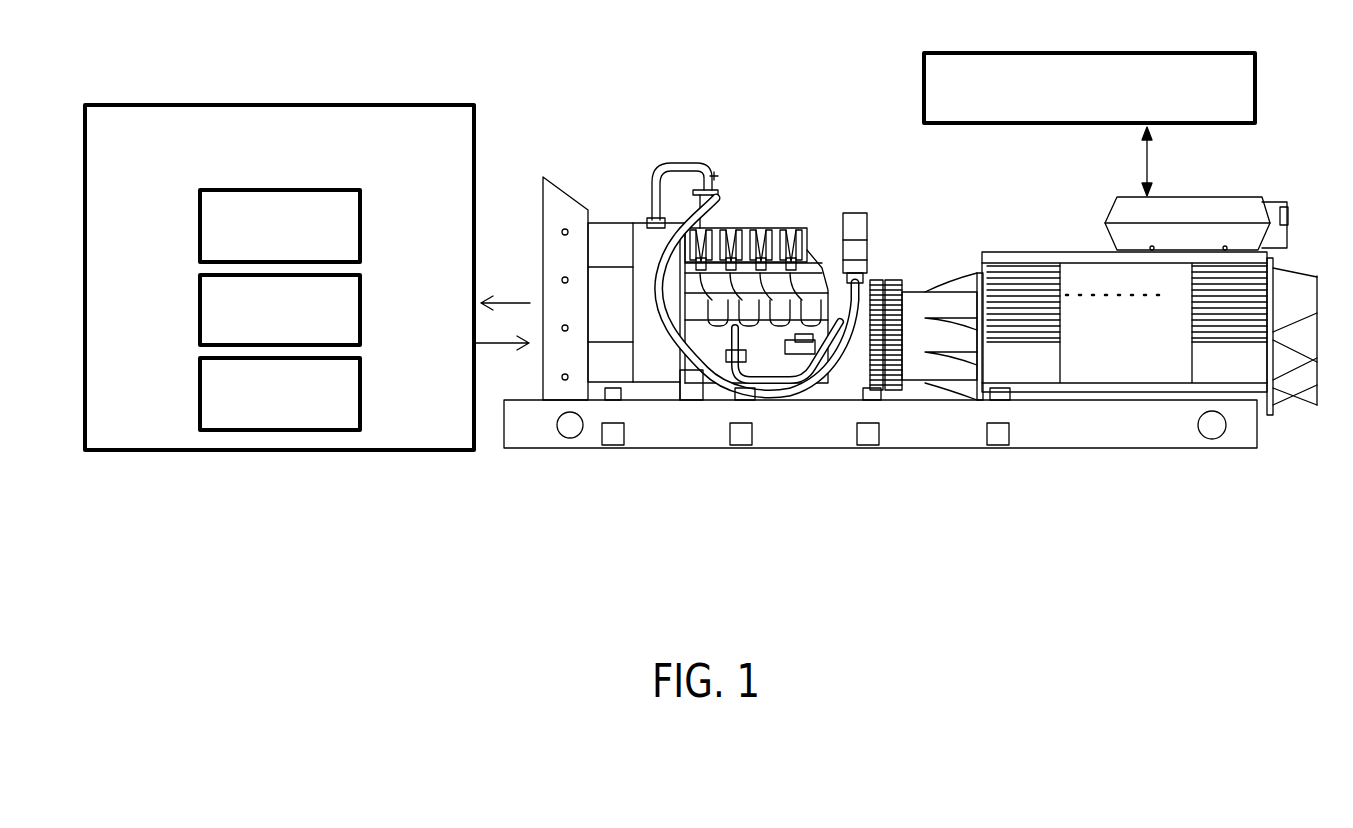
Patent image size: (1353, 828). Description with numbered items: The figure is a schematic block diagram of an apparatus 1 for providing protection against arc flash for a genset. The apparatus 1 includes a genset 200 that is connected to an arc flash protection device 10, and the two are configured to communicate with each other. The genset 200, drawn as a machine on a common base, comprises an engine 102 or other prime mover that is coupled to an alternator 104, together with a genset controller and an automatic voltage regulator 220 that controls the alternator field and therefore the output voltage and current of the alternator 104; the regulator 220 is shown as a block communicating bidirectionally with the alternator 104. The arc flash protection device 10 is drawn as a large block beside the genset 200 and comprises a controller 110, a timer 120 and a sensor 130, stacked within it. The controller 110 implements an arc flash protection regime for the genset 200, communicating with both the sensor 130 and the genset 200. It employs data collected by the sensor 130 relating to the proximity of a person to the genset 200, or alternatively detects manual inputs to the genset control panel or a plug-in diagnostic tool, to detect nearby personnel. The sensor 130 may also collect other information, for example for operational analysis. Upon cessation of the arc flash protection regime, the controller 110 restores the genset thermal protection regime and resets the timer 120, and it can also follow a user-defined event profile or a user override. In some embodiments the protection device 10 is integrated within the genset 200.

The apparatus 1 is at (735, 480).
The arc flash protection device 10 is at (279, 277).
The controller 110 is at (280, 226).
The timer 120 is at (280, 310).
The sensor 130 is at (280, 394).
The engine 102 is at (812, 207).
The alternator 104 is at (1002, 232).
The genset 200 is at (985, 480).
The automatic voltage regulator 220 is at (1089, 88).